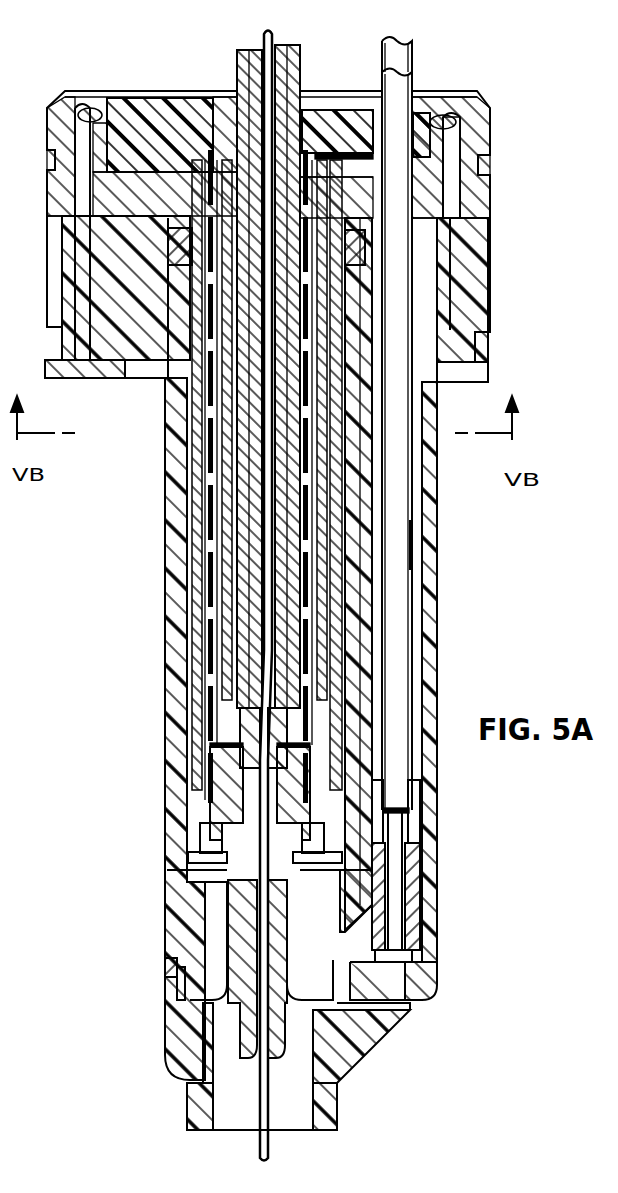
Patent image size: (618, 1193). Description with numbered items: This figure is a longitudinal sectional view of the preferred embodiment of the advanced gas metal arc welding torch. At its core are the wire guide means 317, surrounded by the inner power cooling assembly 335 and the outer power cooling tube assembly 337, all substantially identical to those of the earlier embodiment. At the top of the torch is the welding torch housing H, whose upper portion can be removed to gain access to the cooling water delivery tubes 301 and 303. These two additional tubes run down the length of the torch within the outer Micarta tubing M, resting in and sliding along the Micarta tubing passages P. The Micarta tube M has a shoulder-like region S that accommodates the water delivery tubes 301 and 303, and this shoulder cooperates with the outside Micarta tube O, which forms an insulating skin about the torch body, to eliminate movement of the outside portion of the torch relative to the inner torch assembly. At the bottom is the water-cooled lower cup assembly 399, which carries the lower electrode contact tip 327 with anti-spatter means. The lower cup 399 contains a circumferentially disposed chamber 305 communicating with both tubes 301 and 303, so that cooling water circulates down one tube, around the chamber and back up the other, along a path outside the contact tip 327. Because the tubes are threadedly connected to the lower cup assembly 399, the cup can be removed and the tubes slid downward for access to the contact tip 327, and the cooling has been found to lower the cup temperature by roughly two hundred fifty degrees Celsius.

The cooling water delivery tube 303 is at (412, 44).
The cooling water delivery tube 301 is at (414, 78).
The welding torch housing H is at (480, 124).
The Micarta tubing passages P is at (415, 545).
The shoulder-like region S is at (437, 629).
The outer Micarta tubing M is at (432, 826).
The outside Micarta tube O is at (430, 870).
The circumferentially disposed chamber 305 is at (395, 982).
The wire guide means 317 is at (250, 470).
The inner power cooling assembly 335 is at (235, 537).
The outer power cooling tube assembly 337 is at (205, 610).
The lower electrode contact tip 327 is at (250, 948).
The water-cooled lower cup assembly 399 is at (167, 962).